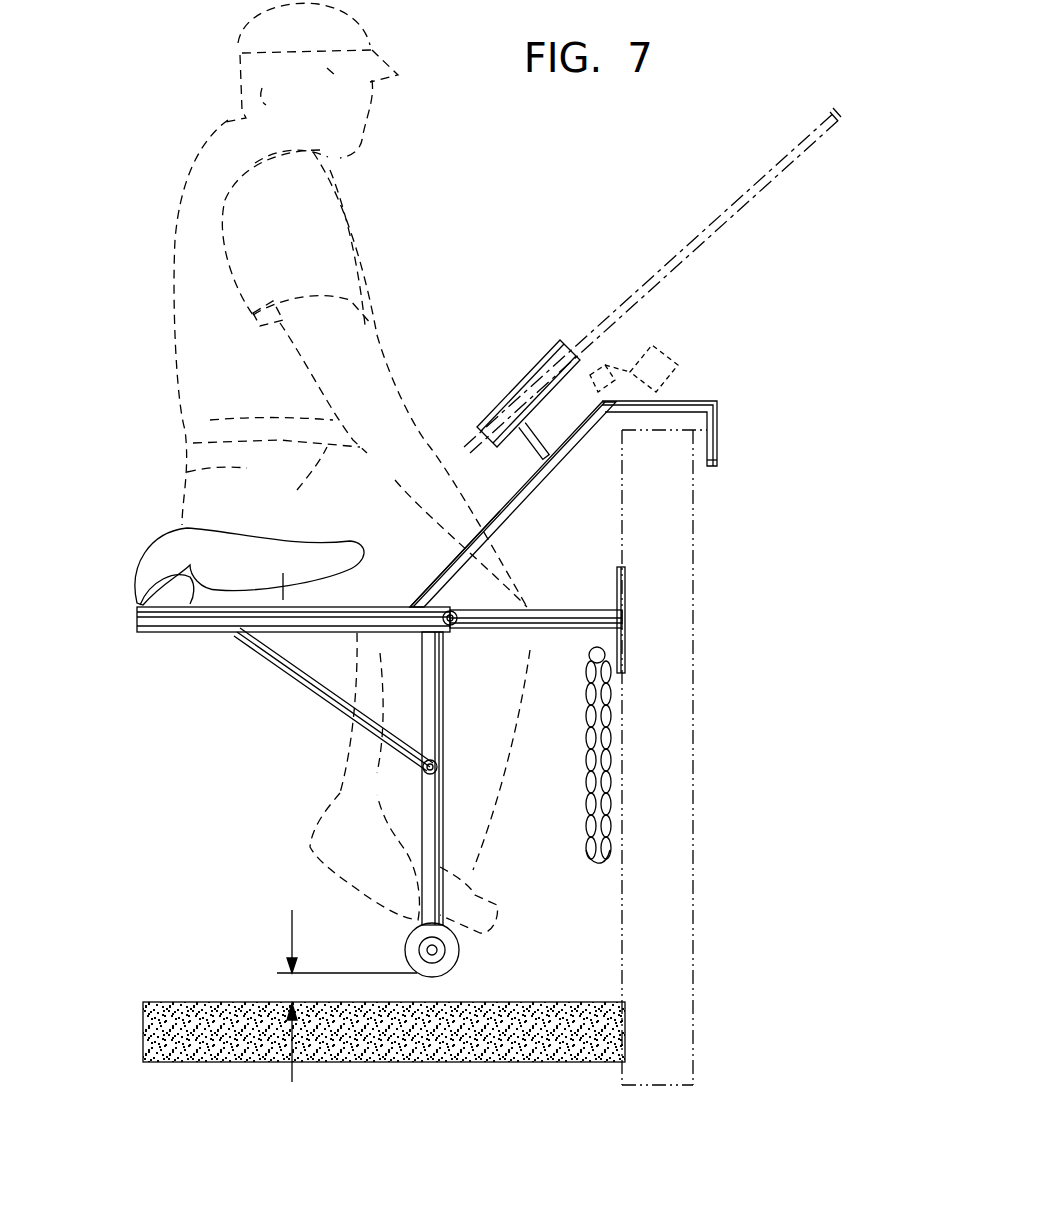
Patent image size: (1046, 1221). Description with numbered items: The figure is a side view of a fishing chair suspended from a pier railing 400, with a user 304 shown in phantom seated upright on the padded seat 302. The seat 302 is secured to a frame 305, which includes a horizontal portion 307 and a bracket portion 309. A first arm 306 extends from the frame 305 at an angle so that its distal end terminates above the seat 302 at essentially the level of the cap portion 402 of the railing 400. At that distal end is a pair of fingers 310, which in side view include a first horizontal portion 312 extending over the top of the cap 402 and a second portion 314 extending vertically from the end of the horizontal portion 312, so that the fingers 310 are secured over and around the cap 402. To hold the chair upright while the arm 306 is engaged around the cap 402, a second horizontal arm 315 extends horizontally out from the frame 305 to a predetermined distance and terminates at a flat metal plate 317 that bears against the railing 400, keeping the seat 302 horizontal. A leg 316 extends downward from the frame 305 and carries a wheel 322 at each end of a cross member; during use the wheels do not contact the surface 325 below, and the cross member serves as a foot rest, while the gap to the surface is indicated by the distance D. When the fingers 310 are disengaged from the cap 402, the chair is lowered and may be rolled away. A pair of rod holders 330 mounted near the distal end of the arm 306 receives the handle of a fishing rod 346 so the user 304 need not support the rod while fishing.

The padded seat 302 is at (170, 620).
The user 304 is at (210, 293).
The frame 305 is at (307, 632).
The first arm 306 is at (468, 452).
The horizontal portion 307 is at (240, 633).
The bracket portion 309 is at (350, 717).
The pair of fingers 310 is at (644, 295).
The first horizontal portion 312 is at (690, 400).
The second portion 314 is at (717, 427).
The second horizontal arm 315 is at (553, 610).
The leg 316 is at (443, 704).
The flat metal plate 317 is at (620, 568).
The wheel 322 is at (458, 960).
The surface 325 is at (185, 1000).
The rod holders 330 is at (535, 382).
The fishing rod 346 is at (610, 310).
The pier railing 400 is at (675, 655).
The cap portion 402 is at (640, 480).
The distance D is at (293, 992).